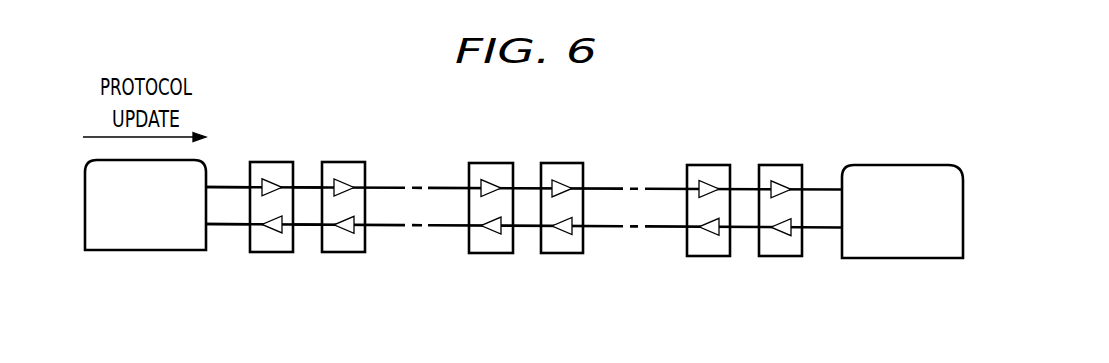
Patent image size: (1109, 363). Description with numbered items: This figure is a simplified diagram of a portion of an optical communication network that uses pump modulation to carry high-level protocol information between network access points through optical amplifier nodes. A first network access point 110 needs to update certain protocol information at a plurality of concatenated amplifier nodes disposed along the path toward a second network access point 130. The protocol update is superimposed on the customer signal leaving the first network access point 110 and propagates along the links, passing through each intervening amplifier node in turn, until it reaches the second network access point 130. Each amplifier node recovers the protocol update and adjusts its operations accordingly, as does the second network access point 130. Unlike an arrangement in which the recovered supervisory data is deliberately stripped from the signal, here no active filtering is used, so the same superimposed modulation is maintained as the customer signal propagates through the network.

The first network access point 110 is at (142, 251).
The second network access point 130 is at (900, 258).